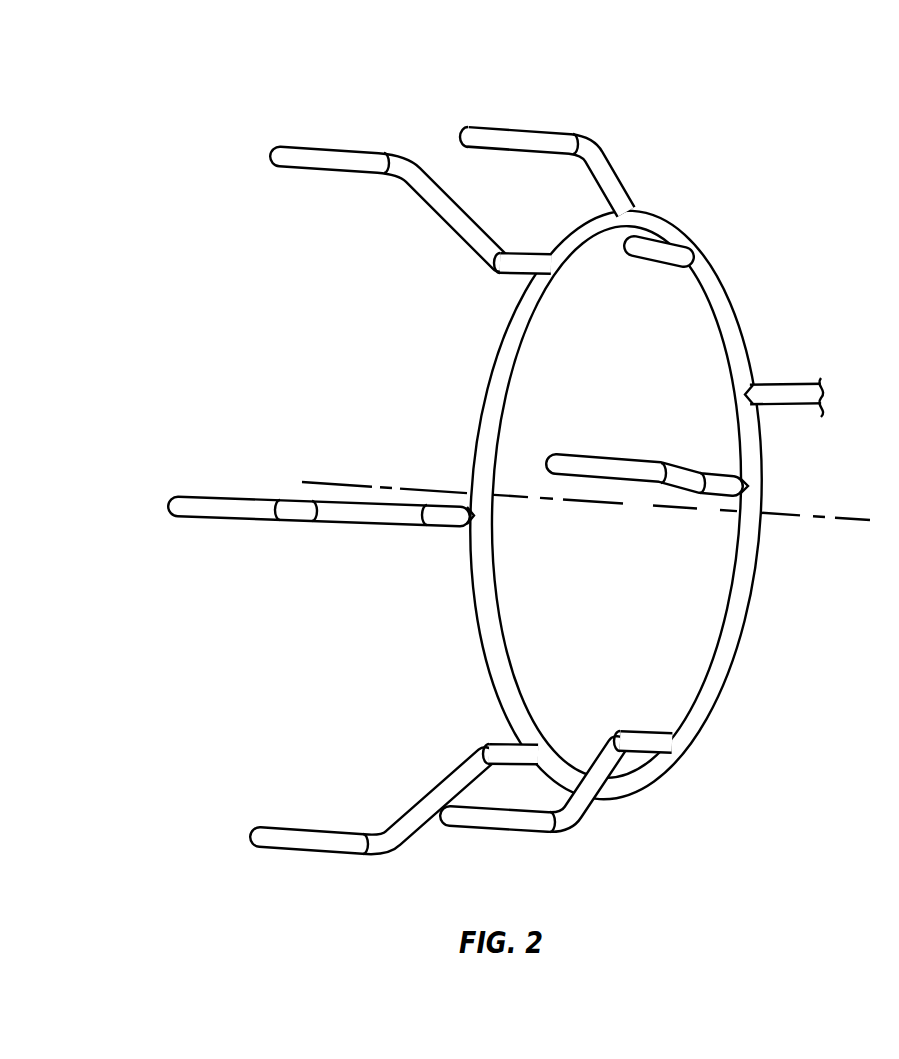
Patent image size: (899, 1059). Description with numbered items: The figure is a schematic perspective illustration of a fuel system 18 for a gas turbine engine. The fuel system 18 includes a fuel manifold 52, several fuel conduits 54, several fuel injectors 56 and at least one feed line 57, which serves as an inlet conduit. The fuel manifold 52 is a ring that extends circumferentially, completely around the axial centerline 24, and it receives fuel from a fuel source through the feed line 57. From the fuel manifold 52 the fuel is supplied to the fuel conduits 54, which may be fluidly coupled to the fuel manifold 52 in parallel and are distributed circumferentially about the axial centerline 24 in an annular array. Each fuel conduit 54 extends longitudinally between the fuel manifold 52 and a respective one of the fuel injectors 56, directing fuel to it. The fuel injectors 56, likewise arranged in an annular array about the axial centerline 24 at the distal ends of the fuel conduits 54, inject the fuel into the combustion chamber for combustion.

The fuel system 18 is at (737, 167).
The axial centerline 24 is at (852, 528).
The fuel manifold 52 is at (738, 281).
The fuel conduits 54 is at (349, 140).
The fuel injectors 56 is at (270, 147).
The feed line 57 is at (795, 396).